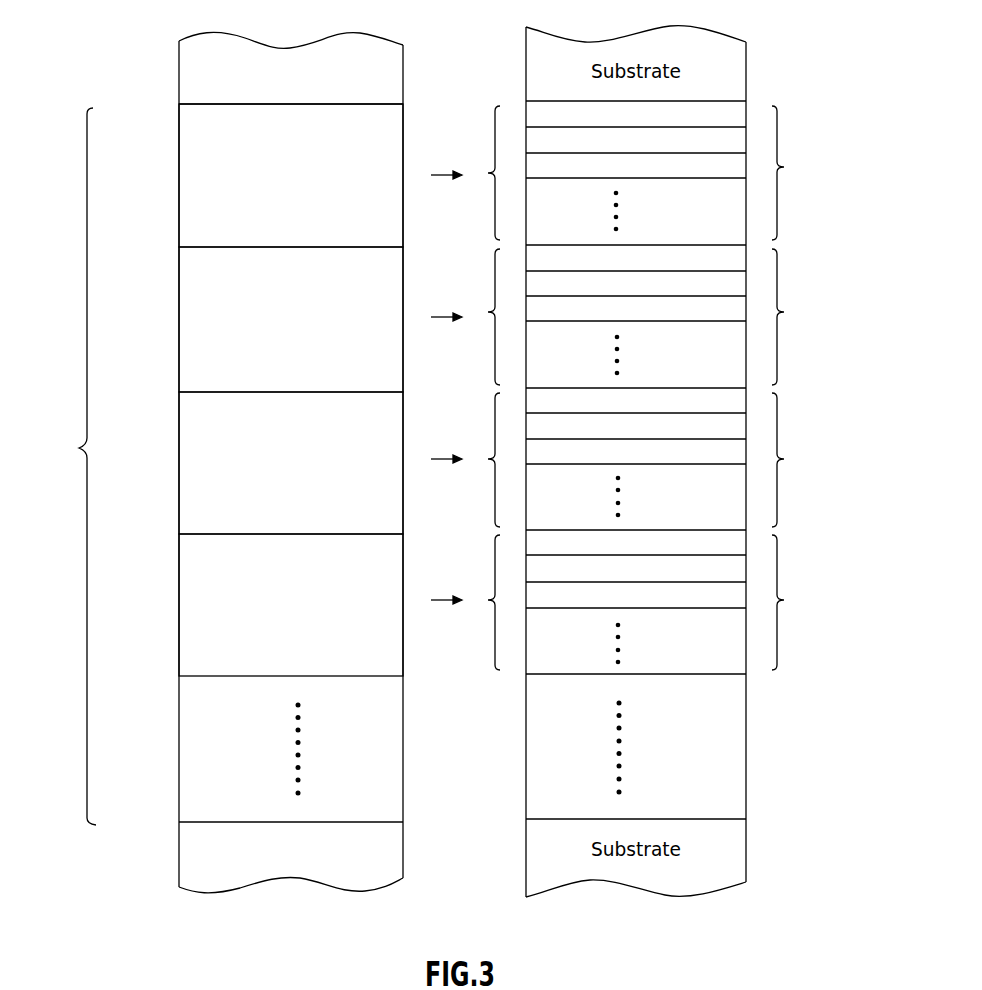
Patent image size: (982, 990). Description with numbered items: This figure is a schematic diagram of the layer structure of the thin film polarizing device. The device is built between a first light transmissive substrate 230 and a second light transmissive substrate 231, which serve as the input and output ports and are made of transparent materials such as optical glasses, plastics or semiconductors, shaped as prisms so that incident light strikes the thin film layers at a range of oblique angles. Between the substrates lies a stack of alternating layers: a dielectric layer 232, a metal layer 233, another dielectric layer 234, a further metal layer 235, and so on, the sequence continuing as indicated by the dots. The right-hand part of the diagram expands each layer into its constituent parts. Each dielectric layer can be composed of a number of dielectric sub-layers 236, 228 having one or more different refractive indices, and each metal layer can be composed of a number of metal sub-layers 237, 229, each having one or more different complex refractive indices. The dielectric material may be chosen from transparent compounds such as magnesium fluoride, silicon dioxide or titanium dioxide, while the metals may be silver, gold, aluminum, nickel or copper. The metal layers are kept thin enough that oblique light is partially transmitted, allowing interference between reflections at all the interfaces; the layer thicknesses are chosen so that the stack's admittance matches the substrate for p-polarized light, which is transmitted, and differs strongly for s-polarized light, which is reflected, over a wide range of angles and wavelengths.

The dielectric sub-layers 228 is at (76, 449).
The metal sub-layers 229 is at (791, 597).
The first light transmissive substrate 230 is at (207, 81).
The second light transmissive substrate 231 is at (213, 871).
The dielectric layer 232 is at (210, 195).
The metal layer 233 is at (211, 336).
The dielectric layer 234 is at (212, 481).
The metal layer 235 is at (212, 625).
The dielectric sub-layers 236 is at (793, 164).
The metal sub-layers 237 is at (793, 310).